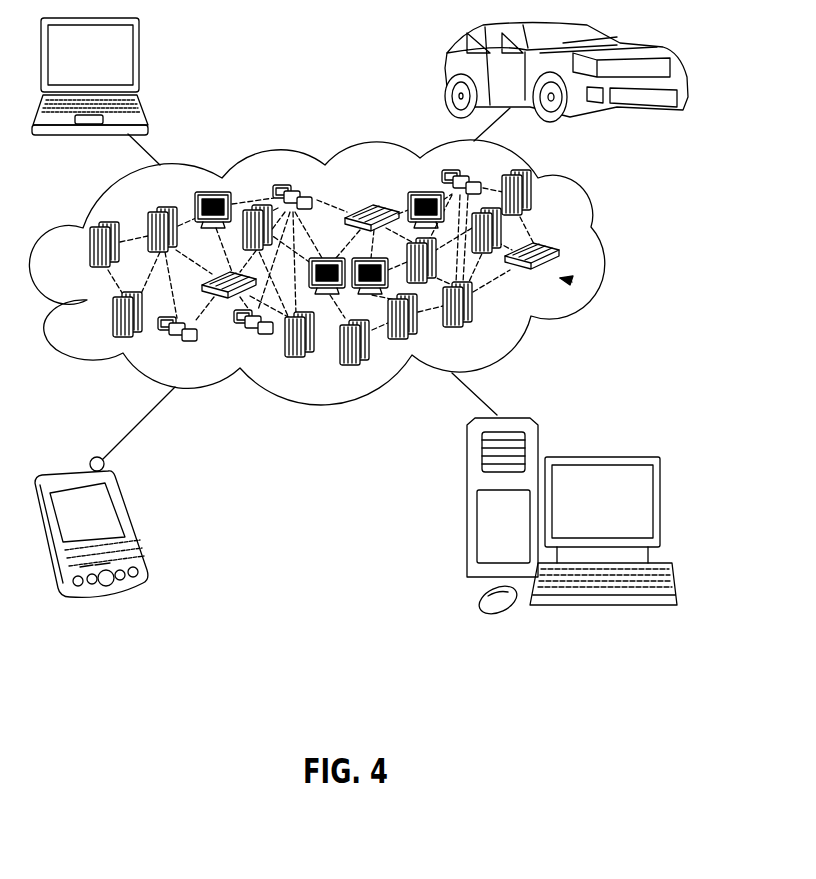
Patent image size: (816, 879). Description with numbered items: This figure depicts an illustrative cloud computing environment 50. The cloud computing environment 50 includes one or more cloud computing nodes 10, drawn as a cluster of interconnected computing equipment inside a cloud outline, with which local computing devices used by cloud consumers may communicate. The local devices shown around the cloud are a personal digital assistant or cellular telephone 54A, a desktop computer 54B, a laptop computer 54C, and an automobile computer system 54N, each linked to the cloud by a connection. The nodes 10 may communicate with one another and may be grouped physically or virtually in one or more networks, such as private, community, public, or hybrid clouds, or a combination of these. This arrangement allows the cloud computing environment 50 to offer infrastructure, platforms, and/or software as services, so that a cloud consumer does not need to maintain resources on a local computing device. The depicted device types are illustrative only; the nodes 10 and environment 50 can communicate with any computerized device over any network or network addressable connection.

The cloud computing nodes 10 is at (572, 282).
The cloud computing environment 50 is at (603, 253).
The personal digital assistant (PDA) or cellular telephone 54A is at (137, 523).
The desktop computer 54B is at (601, 457).
The laptop computer 54C is at (140, 60).
The automobile computer system 54N is at (448, 72).